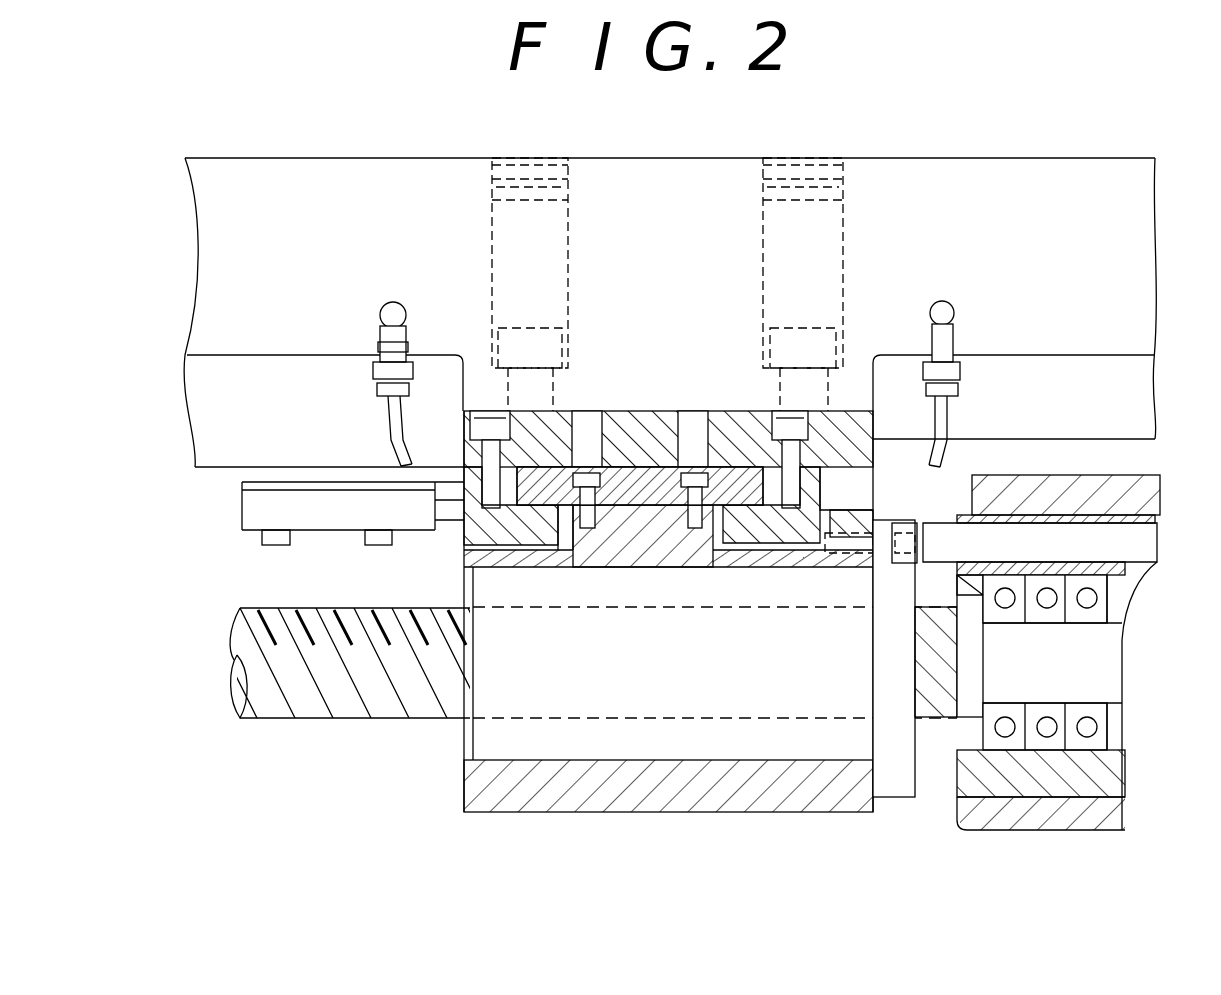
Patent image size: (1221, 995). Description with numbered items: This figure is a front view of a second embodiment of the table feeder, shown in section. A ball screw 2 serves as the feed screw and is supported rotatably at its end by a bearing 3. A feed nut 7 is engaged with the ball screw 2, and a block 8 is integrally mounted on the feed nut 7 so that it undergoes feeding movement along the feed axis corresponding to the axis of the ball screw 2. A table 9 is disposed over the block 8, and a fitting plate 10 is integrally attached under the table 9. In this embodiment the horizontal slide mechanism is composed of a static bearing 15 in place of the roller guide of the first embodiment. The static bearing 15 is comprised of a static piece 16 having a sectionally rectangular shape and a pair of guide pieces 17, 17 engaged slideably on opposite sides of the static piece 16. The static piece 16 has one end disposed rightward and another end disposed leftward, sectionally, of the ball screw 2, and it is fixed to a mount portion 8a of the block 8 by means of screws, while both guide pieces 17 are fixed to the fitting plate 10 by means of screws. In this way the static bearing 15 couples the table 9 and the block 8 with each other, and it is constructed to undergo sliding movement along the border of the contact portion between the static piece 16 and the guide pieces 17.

The ball screw 2 is at (352, 708).
The bearing 3 is at (1050, 745).
The feed nut 7 is at (548, 745).
The block 8 is at (718, 792).
The mount portion 8a is at (578, 545).
The table 9 is at (960, 223).
The fitting plate 10 is at (855, 452).
The static bearing 15 is at (655, 520).
The static piece 16 is at (640, 470).
The guide piece 17 is at (462, 540).